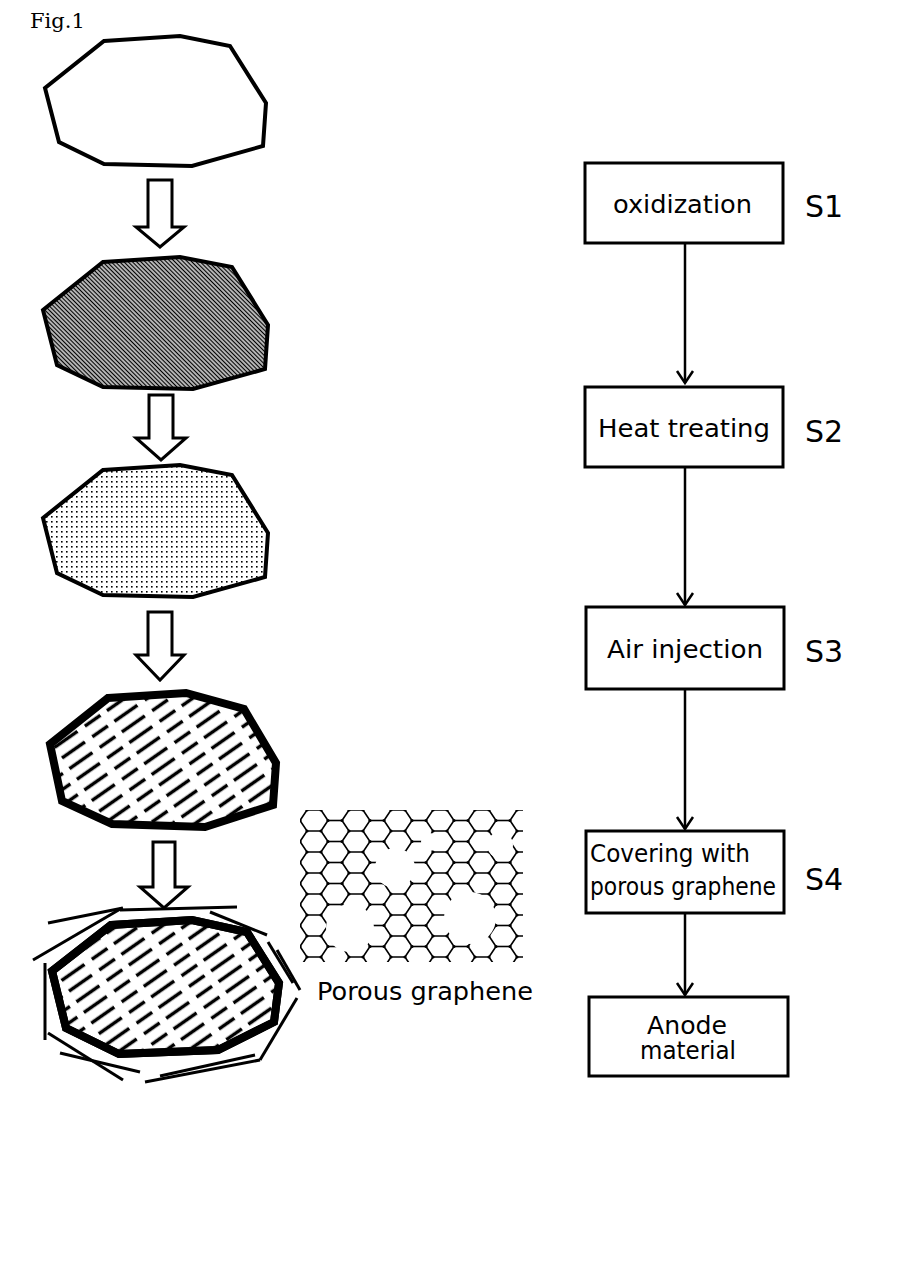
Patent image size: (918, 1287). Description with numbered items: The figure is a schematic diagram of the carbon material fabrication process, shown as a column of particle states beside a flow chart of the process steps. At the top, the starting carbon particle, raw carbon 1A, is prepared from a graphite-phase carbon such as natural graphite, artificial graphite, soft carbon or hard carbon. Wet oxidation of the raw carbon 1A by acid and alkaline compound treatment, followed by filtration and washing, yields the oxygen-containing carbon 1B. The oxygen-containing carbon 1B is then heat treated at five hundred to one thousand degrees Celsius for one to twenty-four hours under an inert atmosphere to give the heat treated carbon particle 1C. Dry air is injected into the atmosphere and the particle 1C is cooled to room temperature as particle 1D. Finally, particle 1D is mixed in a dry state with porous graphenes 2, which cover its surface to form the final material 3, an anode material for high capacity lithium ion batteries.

The raw carbon 1A is at (227, 142).
The oxygen-containing carbon 1B is at (228, 335).
The heat treated carbon particle 1C is at (228, 530).
The particle after air injection 1D is at (260, 732).
The porous graphene 2 is at (400, 830).
The final material 3 is at (255, 1080).